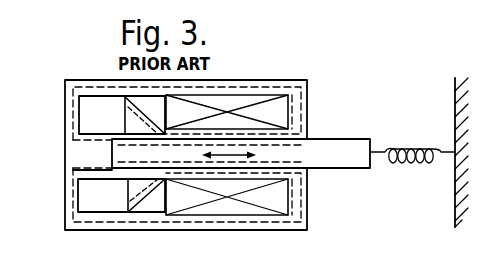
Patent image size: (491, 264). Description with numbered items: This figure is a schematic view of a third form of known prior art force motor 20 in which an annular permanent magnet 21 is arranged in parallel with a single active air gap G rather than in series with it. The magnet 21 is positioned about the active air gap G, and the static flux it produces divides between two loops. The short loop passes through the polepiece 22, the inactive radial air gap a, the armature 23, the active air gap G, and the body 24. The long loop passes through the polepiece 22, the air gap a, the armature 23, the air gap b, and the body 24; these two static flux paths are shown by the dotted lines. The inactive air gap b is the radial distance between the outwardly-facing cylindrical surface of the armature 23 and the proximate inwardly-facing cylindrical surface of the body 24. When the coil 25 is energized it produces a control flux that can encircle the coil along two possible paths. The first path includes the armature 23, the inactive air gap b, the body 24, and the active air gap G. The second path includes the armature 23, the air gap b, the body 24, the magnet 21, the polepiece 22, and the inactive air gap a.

The force motor 20 is at (284, 68).
The annular permanent magnet 21 is at (79, 115).
The polepiece 22 is at (145, 204).
The armature 23 is at (348, 139).
The body 24 is at (88, 80).
The coil 25 is at (232, 100).
The inactive radial air gap a is at (142, 140).
The inactive air gap b is at (303, 139).
The active air gap G is at (106, 157).